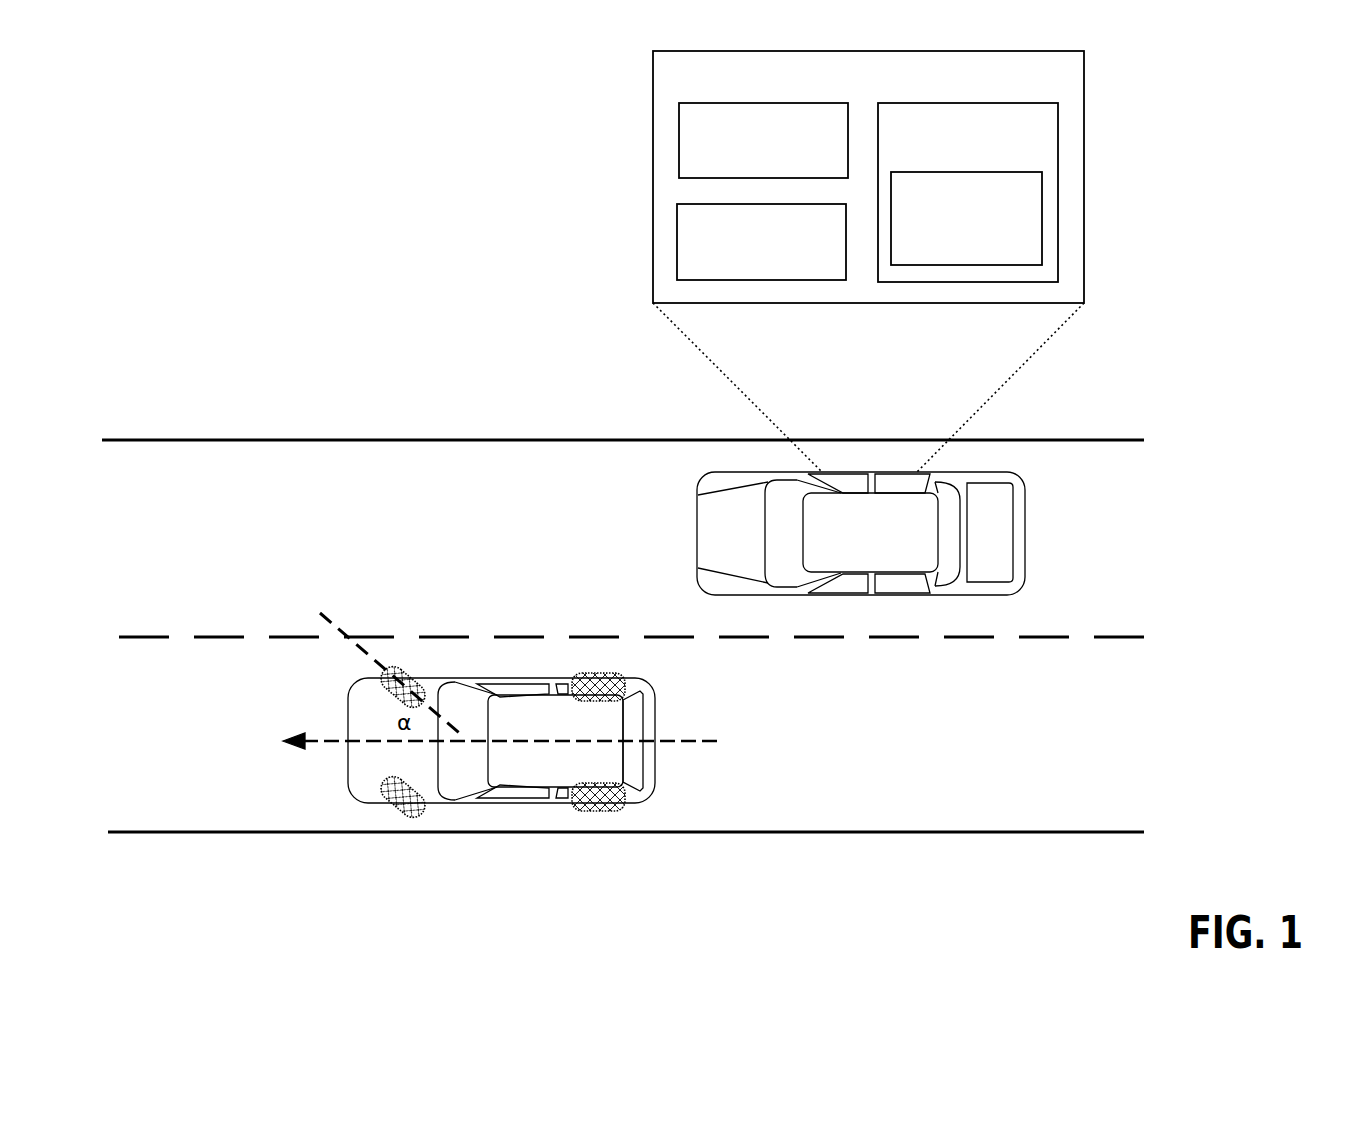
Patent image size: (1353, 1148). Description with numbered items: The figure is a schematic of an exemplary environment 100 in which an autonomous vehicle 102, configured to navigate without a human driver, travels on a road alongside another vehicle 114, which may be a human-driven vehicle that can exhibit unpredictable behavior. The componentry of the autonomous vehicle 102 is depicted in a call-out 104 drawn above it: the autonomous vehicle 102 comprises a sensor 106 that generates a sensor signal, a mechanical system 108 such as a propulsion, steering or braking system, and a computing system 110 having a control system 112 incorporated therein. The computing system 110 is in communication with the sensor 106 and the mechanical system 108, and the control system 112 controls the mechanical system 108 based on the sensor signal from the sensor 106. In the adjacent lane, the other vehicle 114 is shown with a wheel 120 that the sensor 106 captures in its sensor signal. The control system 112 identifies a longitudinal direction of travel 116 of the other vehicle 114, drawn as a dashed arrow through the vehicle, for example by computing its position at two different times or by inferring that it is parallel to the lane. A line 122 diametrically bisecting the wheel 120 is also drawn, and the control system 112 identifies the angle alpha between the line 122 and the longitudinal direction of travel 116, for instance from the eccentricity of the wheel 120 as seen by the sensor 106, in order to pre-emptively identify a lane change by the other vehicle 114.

The environment 100 is at (233, 135).
The autonomous vehicle 102 is at (1015, 477).
The call-out 104 is at (1058, 83).
The sensor 106 is at (840, 175).
The mechanical system 108 is at (840, 275).
The computing system 110 is at (1058, 150).
The control system 112 is at (1037, 261).
The other vehicle 114 is at (540, 735).
The longitudinal direction of travel 116 is at (338, 741).
The wheel 120 is at (410, 672).
The line 122 is at (325, 611).